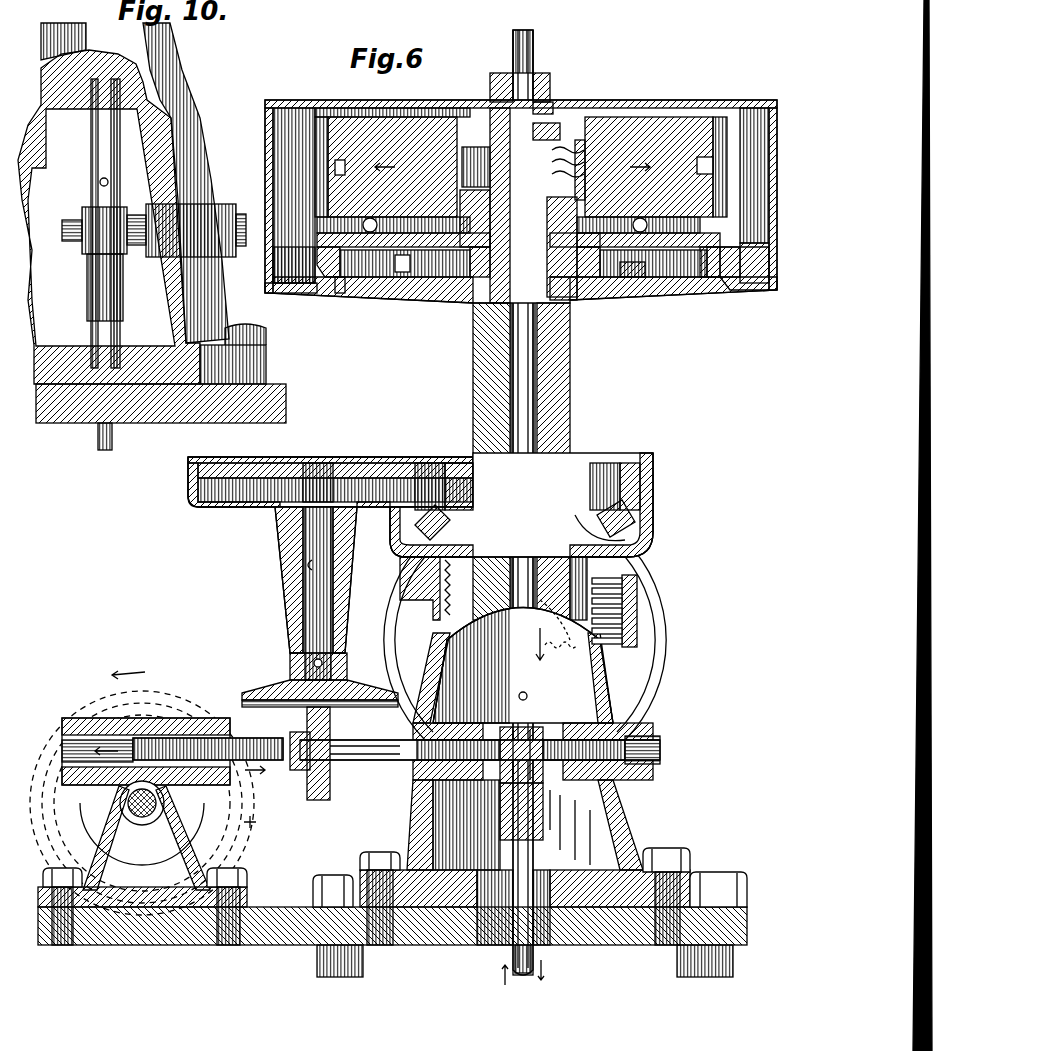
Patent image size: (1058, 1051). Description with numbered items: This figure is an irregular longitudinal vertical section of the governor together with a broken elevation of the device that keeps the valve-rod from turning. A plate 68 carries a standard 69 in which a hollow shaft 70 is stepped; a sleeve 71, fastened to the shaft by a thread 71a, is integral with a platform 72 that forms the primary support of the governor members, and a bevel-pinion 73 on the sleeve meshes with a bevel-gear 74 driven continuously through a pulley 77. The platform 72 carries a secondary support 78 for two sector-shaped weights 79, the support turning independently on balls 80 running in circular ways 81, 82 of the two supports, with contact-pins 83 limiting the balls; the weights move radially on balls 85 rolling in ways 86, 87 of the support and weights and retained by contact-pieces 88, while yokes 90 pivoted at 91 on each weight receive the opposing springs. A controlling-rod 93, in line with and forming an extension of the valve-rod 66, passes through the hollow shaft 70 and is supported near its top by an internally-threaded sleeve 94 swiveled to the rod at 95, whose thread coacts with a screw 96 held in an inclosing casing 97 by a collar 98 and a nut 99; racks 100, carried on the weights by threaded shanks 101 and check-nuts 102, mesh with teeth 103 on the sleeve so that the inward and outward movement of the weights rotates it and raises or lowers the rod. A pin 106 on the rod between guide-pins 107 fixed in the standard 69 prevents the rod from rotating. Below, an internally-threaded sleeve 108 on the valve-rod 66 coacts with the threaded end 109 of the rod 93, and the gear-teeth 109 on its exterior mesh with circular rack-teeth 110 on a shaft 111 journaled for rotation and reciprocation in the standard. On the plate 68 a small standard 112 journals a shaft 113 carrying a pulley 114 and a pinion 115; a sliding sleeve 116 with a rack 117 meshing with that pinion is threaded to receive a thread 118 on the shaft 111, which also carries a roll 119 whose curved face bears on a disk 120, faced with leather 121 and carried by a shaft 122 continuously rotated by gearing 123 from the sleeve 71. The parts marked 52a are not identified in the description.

In FIG. 6, the bolt 52a is at (363, 962).
In FIG. 10, the valve-rod 66 is at (112, 438).
In FIG. 6, the valve-rod 66 is at (525, 974).
In FIG. 10, the plate 68 is at (286, 402).
In FIG. 6, the plate 68 is at (605, 935).
In FIG. 10, the standard 69 is at (176, 122).
In FIG. 6, the standard 69 is at (637, 808).
In FIG. 6, the hollow shaft 70 is at (548, 399).
In FIG. 6, the sleeve 71 is at (569, 370).
In FIG. 6, the thread 71a is at (575, 293).
In FIG. 6, the platform 72 is at (645, 280).
In FIG. 6, the bevel-pinion 73 is at (640, 525).
In FIG. 6, the bevel-gear 74 is at (625, 602).
In FIG. 6, the pulley 77 is at (655, 582).
In FIG. 6, the secondary support 78 is at (730, 280).
In FIG. 6, the centrifugal weights 79 is at (398, 117).
In FIG. 6, the balls 80 is at (400, 280).
In FIG. 6, the circular way 81 is at (338, 292).
In FIG. 6, the circular way 82 is at (318, 292).
In FIG. 6, the contact-pins 83 is at (355, 285).
In FIG. 6, the balls 85 is at (320, 230).
In FIG. 6, the ways 86 is at (300, 248).
In FIG. 6, the ways 87 is at (365, 225).
In FIG. 6, the contact-pieces 88 is at (625, 238).
In FIG. 6, the yokes 90 is at (305, 165).
In FIG. 6, the pivot 91 is at (322, 110).
In FIG. 10, the controlling-rod 93 is at (114, 146).
In FIG. 6, the controlling-rod 93 is at (528, 443).
In FIG. 6, the internally-threaded sleeve 94 is at (558, 122).
In FIG. 6, the swivel 95 is at (478, 315).
In FIG. 6, the screw 96 is at (497, 140).
In FIG. 6, the inclosing casing 97 is at (635, 104).
In FIG. 6, the collar 98 is at (545, 105).
In FIG. 6, the nut 99 is at (535, 48).
In FIG. 6, the racks 100 is at (485, 190).
In FIG. 6, the shanks 101 is at (568, 150).
In FIG. 6, the check-nuts 102 is at (585, 175).
In FIG. 6, the teeth 103 is at (492, 140).
In FIG. 10, the pin 106 is at (108, 182).
In FIG. 6, the pin 106 is at (528, 697).
In FIG. 10, the guide-pins 107 is at (94, 118).
In FIG. 10, the internally-threaded sleeve 108 is at (123, 290).
In FIG. 6, the internally-threaded sleeve 108 is at (543, 822).
In FIG. 10, the threaded end 109 is at (92, 215).
In FIG. 6, the threaded end 109 is at (543, 714).
In FIG. 10, the rack-teeth 110 is at (72, 240).
In FIG. 6, the rack-teeth 110 is at (566, 740).
In FIG. 10, the shaft 111 is at (236, 222).
In FIG. 6, the shaft 111 is at (372, 762).
In FIG. 6, the small standard 112 is at (213, 847).
In FIG. 6, the shaft 113 is at (112, 808).
In FIG. 6, the pulley 114 is at (256, 822).
In FIG. 6, the pinion 115 is at (177, 793).
In FIG. 6, the sleeve 116 is at (62, 728).
In FIG. 6, the rack 117 is at (62, 777).
In FIG. 6, the thread 118 is at (283, 745).
In FIG. 6, the roll 119 is at (318, 800).
In FIG. 6, the disk 120 is at (290, 685).
In FIG. 6, the renewable surface 121 is at (365, 705).
In FIG. 6, the shaft 122 is at (305, 612).
In FIG. 6, the gearing 123 is at (420, 460).